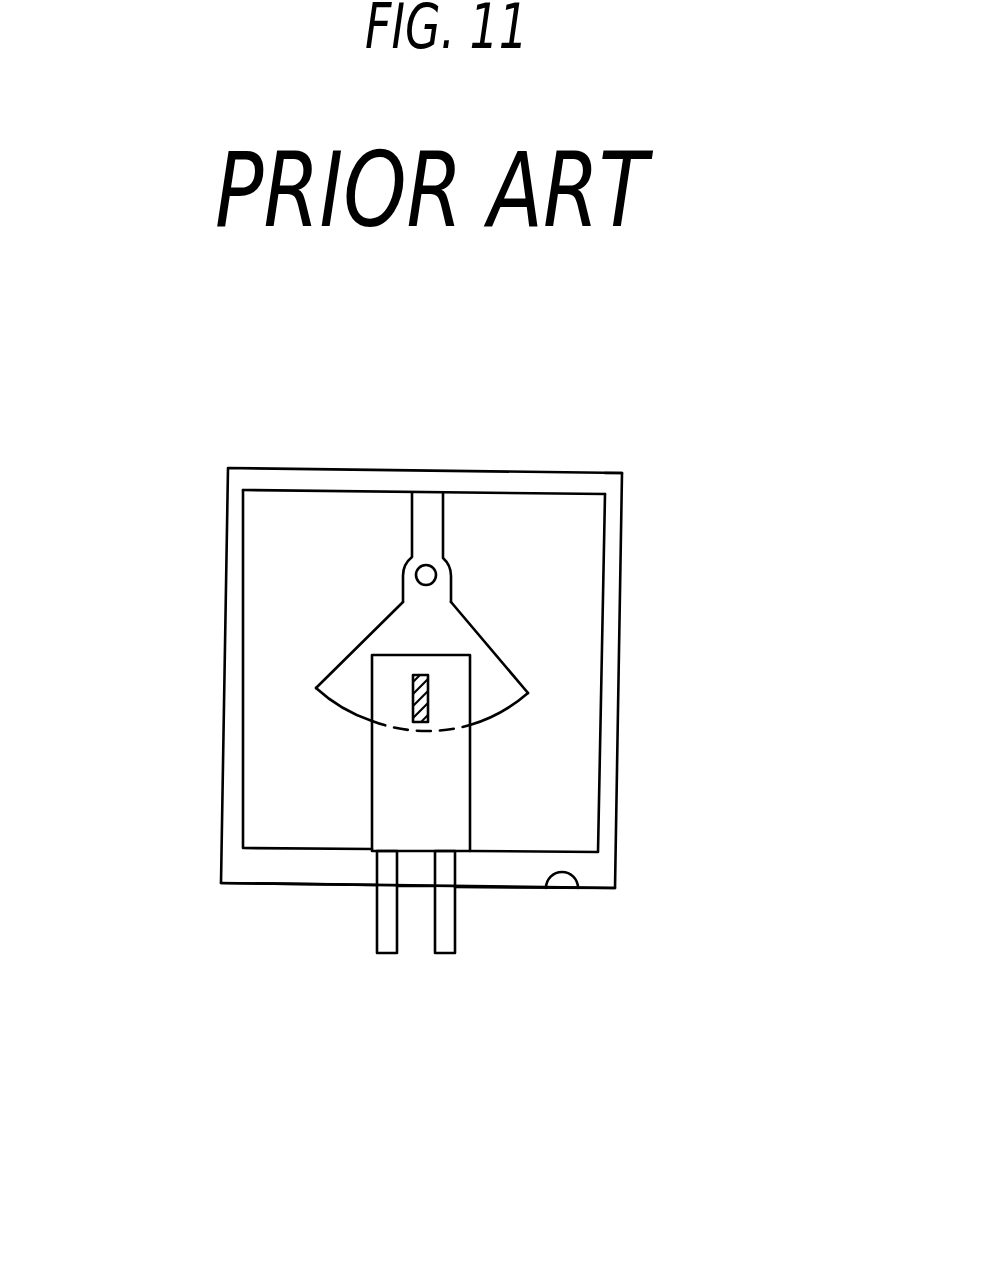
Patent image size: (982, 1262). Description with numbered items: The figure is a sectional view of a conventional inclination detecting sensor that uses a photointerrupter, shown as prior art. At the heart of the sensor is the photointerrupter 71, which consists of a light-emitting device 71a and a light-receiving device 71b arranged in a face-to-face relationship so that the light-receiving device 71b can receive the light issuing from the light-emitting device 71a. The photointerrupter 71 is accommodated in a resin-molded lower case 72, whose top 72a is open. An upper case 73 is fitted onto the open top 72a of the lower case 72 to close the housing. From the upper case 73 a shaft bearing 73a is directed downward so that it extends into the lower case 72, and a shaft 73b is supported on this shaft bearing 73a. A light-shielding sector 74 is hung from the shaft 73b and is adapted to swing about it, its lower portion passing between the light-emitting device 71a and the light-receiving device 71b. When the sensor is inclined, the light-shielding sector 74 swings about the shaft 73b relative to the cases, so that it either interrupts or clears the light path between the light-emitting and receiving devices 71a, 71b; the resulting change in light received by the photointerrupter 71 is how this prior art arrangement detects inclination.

The photointerrupter 71 is at (470, 780).
The light-emitting device 71a is at (646, 702).
The light-receiving device 71b is at (428, 699).
The lower case 72 is at (578, 888).
The top of lower case 72a is at (622, 483).
The upper case 73 is at (577, 473).
The shaft bearing 73a is at (412, 533).
The shaft 73b is at (415, 576).
The light-shielding sector 74 is at (340, 690).